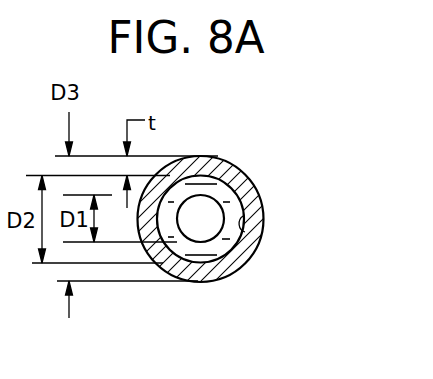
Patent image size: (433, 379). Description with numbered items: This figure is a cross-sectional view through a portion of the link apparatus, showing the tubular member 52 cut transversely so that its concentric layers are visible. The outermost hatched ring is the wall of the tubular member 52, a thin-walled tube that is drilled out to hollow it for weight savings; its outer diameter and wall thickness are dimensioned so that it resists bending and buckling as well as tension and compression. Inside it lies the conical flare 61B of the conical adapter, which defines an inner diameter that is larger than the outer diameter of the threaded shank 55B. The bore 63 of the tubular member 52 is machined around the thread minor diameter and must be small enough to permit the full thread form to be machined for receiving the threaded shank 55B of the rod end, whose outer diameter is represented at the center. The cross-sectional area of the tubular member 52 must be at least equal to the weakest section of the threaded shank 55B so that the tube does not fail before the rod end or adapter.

The tubular member 52 is at (236, 163).
The conical flare 61B is at (236, 210).
The bore 63 is at (240, 228).
The threaded shank 55B is at (212, 246).